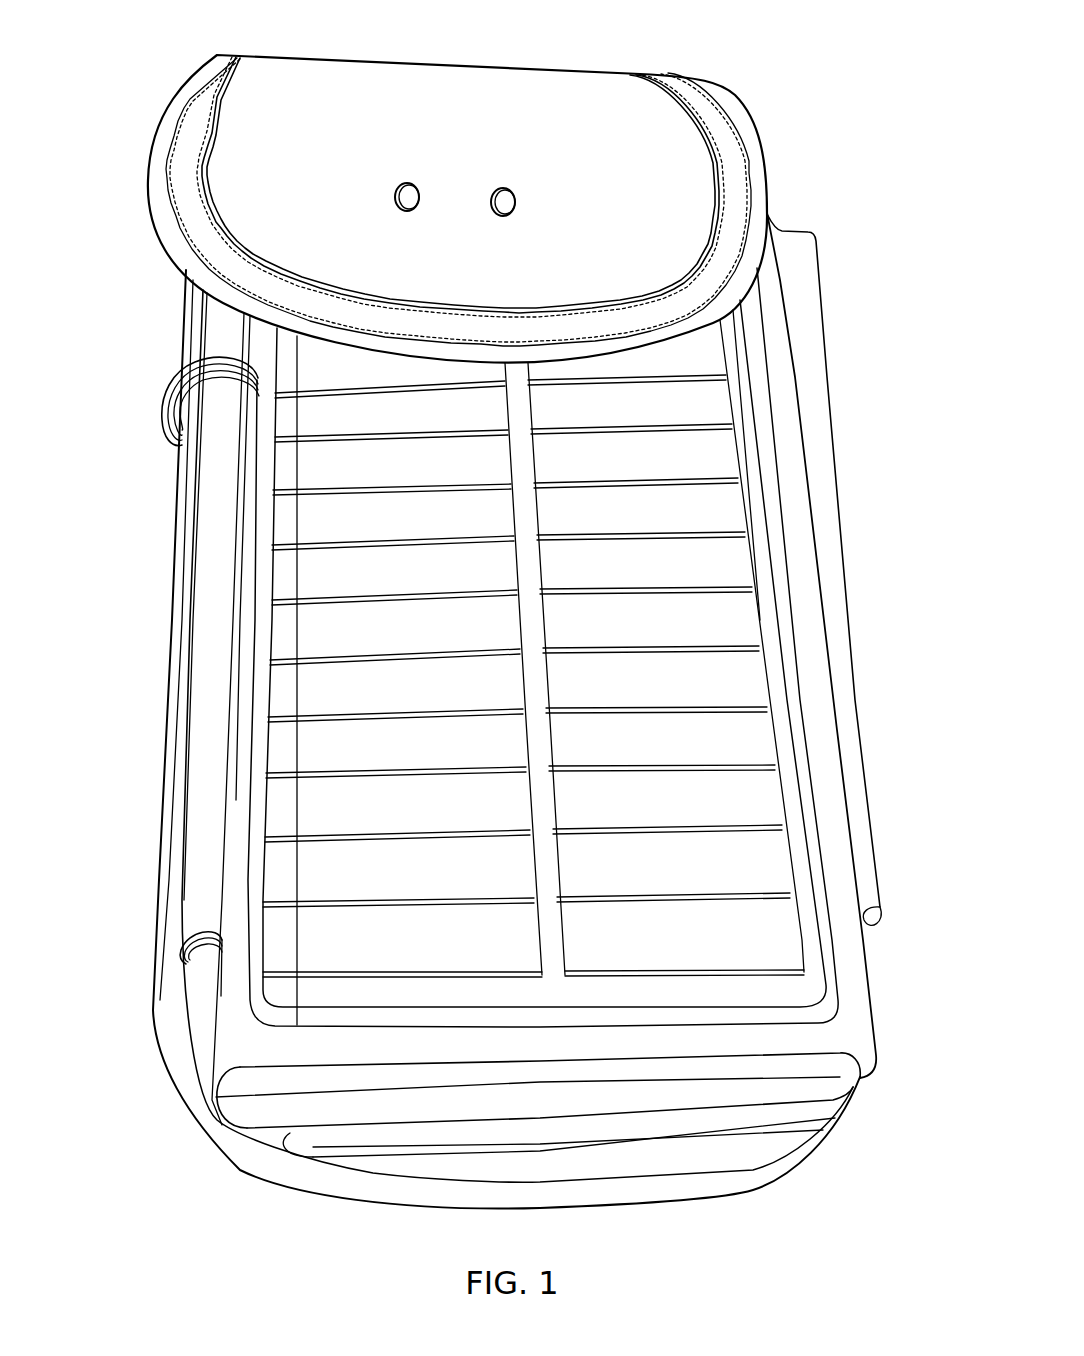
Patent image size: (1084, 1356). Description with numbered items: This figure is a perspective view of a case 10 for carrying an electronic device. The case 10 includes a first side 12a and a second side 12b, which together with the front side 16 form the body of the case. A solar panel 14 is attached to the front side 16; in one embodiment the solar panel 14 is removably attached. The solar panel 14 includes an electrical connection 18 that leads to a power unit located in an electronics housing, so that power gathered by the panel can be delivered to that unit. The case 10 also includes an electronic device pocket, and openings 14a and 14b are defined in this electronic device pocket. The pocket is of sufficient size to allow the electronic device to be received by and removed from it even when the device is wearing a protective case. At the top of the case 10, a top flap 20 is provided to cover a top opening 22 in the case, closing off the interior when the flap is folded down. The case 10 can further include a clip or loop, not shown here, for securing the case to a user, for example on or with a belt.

The case 10 is at (127, 1031).
The first side 12a is at (213, 631).
The second side 12b is at (838, 622).
The solar panel 14 is at (718, 469).
The opening 14a is at (227, 998).
The opening 14b is at (870, 980).
The front side 16 is at (798, 541).
The electrical connection 18 is at (163, 410).
The top flap 20 is at (768, 213).
The top opening 22 is at (262, 83).